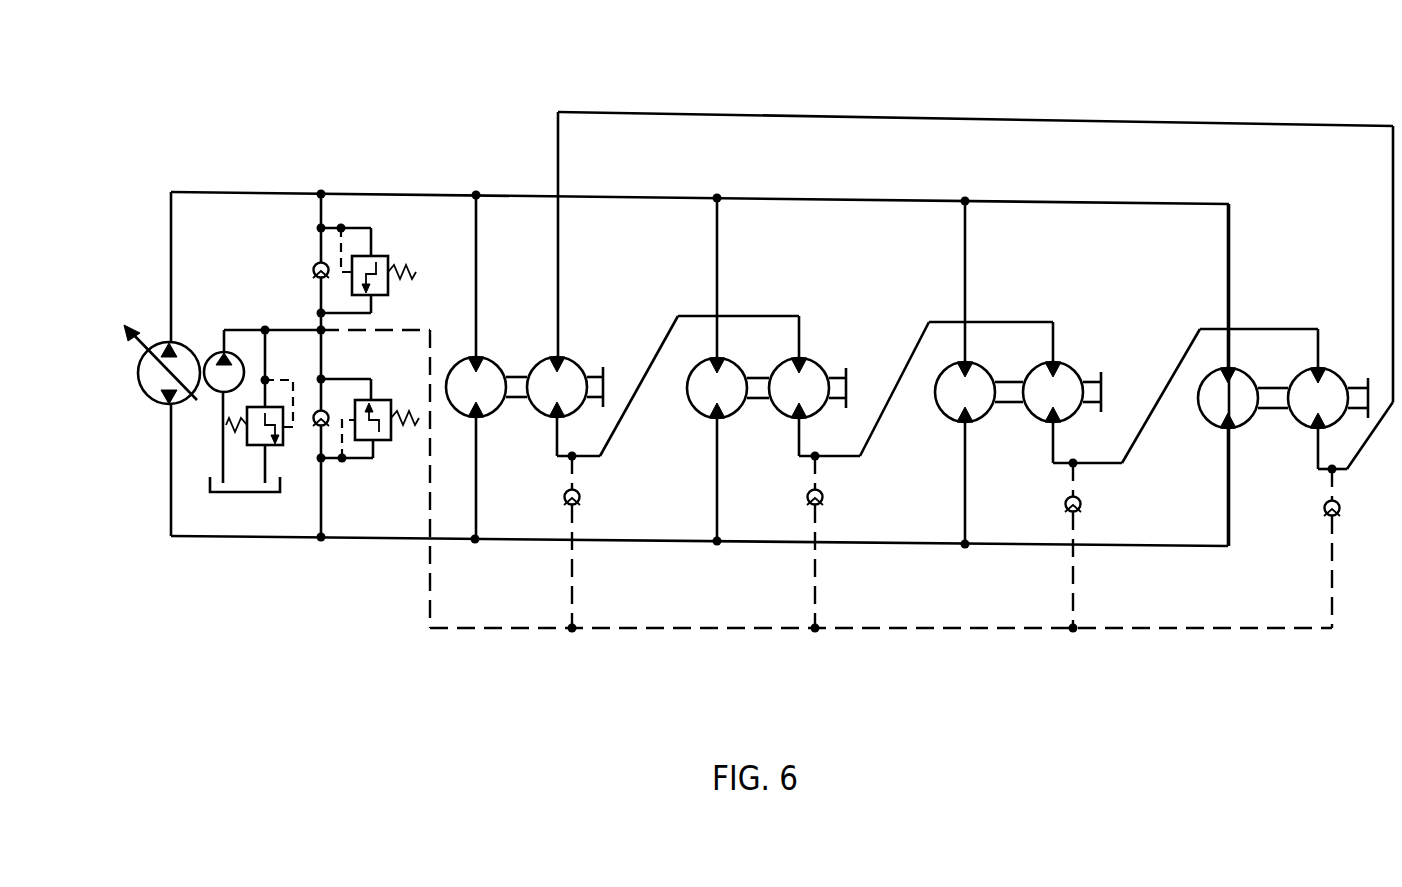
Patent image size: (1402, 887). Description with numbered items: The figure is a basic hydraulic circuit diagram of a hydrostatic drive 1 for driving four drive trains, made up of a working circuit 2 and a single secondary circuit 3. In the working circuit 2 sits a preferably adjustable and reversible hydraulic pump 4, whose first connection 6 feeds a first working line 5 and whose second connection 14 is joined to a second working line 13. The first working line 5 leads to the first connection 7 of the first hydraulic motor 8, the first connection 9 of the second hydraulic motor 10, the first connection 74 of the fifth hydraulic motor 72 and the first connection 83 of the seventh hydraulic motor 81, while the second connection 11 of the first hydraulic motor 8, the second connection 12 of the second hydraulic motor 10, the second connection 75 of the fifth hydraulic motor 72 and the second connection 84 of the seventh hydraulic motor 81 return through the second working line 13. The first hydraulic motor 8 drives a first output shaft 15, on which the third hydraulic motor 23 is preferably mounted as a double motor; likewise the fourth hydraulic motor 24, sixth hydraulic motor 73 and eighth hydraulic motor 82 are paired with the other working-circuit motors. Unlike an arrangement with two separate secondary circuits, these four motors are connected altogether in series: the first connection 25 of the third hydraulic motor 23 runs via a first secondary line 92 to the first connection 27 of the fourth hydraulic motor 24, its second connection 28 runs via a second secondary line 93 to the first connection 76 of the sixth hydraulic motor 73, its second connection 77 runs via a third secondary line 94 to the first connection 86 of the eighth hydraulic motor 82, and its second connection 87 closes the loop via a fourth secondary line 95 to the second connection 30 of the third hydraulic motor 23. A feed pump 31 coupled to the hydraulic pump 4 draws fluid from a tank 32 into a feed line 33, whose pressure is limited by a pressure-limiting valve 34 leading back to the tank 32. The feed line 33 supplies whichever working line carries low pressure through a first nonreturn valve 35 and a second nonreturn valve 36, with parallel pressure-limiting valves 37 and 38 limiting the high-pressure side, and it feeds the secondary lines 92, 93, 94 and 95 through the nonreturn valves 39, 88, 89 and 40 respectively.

The hydrostatic drive 1 is at (446, 156).
The working circuit 2 is at (378, 191).
The secondary circuit 3 is at (841, 103).
The hydraulic pump 4 is at (150, 396).
The first working line 5 is at (263, 192).
The first connection of the hydraulic pump 6 is at (165, 332).
The first connection of the first hydraulic motor 7 is at (474, 355).
The first hydraulic motor 8 is at (462, 390).
The first connection of the second hydraulic motor 9 is at (718, 355).
The second hydraulic motor 10 is at (705, 390).
The second connection of the first hydraulic motor 11 is at (477, 423).
The second connection of the second hydraulic motor 12 is at (715, 421).
The second working line 13 is at (250, 537).
The second connection of the hydraulic pump 14 is at (169, 412).
The first output shaft 15 is at (517, 387).
The third hydraulic motor 23 is at (568, 377).
The fourth hydraulic motor 24 is at (783, 396).
The first connection of the third hydraulic motor 25 is at (548, 422).
The first connection of the fourth hydraulic motor 27 is at (801, 355).
The second connection of the fourth hydraulic motor 28 is at (802, 425).
The second connection of the third hydraulic motor 30 is at (560, 352).
The feed pump 31 is at (212, 393).
The tank 32 is at (225, 492).
The feed line 33 is at (413, 330).
The pressure-limiting valve 34 is at (253, 412).
The first nonreturn valve 35 is at (313, 268).
The second nonreturn valve 36 is at (316, 412).
The pressure-limiting valve 37 is at (384, 262).
The pressure-limiting valve 38 is at (383, 445).
The nonreturn valve 39 is at (582, 502).
The nonreturn valve 40 is at (1327, 514).
The fifth hydraulic motor 72 is at (953, 393).
The sixth hydraulic motor 73 is at (1067, 388).
The first connection of the fifth hydraulic motor 74 is at (960, 356).
The second connection of the fifth hydraulic motor 75 is at (963, 425).
The first connection of the sixth hydraulic motor 76 is at (1055, 361).
The second connection of the sixth hydraulic motor 77 is at (1050, 425).
The seventh hydraulic motor 81 is at (1216, 396).
The eighth hydraulic motor 82 is at (1310, 407).
The first connection of the seventh hydraulic motor 83 is at (1229, 355).
The second connection of the seventh hydraulic motor 84 is at (1201, 444).
The first connection of the eighth hydraulic motor 86 is at (1320, 362).
The second connection of the eighth hydraulic motor 87 is at (1320, 435).
The nonreturn valve 88 is at (823, 503).
The nonreturn valve 89 is at (1081, 510).
The first secondary line 92 is at (618, 430).
The second secondary line 93 is at (870, 438).
The third secondary line 94 is at (1135, 440).
The fourth secondary line 95 is at (1387, 402).